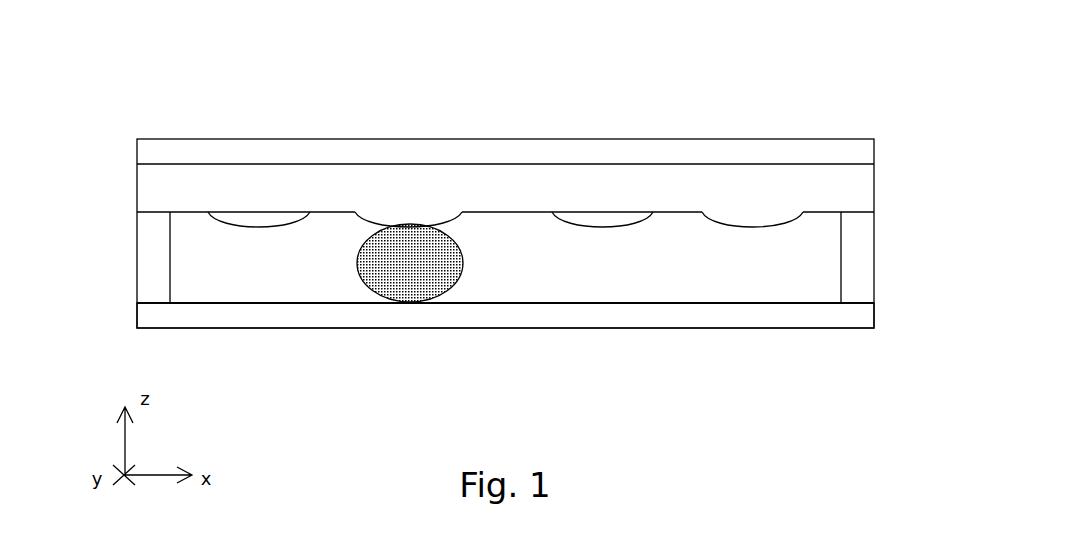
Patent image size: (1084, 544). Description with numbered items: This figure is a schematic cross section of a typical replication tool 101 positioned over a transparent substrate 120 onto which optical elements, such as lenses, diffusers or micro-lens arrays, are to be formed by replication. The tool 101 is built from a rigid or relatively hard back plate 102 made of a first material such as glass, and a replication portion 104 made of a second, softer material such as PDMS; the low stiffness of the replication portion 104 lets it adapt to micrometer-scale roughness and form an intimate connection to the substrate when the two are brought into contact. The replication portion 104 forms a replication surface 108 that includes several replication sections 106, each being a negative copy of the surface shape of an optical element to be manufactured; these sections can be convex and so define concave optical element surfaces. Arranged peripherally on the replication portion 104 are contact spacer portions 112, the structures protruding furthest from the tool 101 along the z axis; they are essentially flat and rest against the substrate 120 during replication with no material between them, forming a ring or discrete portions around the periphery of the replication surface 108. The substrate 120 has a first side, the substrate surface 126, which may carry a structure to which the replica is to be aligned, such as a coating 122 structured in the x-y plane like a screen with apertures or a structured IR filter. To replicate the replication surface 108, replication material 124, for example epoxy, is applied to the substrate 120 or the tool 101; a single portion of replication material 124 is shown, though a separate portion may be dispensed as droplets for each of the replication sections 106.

The replication tool 101 is at (127, 175).
The back plate 102 is at (645, 148).
The replication portion 104 is at (812, 193).
The replication sections 106 is at (389, 210).
The replication surface 108 is at (312, 230).
The contact spacer portions 112 is at (153, 260).
The transparent substrate 120 is at (827, 310).
The coating 122 is at (668, 302).
The replication material 124 is at (424, 240).
The substrate surface 126 is at (318, 307).